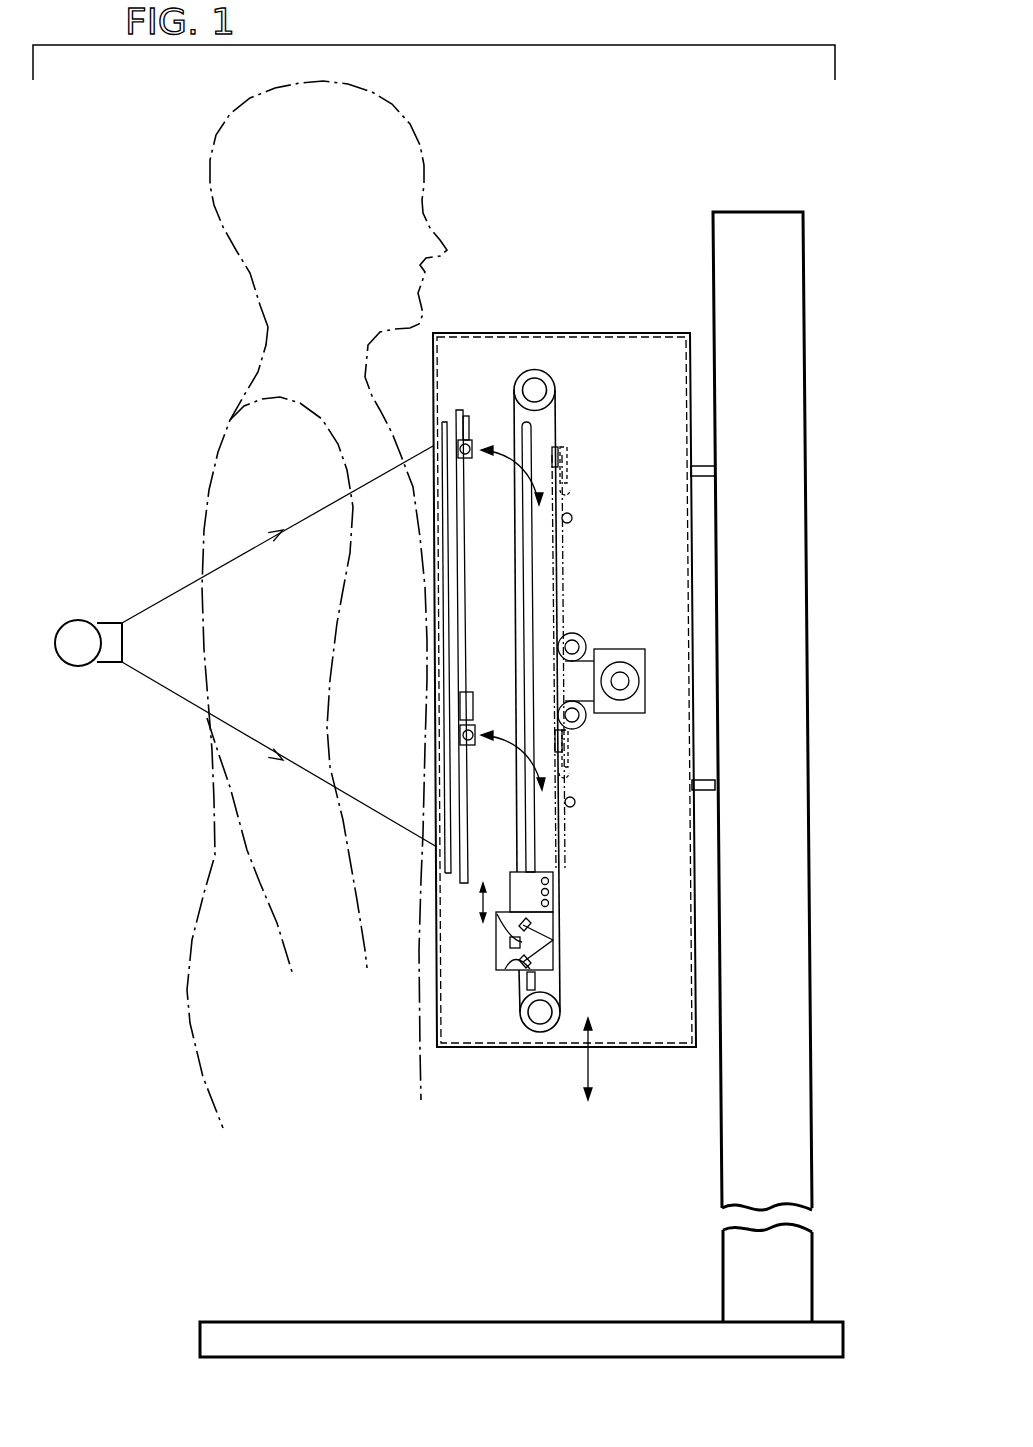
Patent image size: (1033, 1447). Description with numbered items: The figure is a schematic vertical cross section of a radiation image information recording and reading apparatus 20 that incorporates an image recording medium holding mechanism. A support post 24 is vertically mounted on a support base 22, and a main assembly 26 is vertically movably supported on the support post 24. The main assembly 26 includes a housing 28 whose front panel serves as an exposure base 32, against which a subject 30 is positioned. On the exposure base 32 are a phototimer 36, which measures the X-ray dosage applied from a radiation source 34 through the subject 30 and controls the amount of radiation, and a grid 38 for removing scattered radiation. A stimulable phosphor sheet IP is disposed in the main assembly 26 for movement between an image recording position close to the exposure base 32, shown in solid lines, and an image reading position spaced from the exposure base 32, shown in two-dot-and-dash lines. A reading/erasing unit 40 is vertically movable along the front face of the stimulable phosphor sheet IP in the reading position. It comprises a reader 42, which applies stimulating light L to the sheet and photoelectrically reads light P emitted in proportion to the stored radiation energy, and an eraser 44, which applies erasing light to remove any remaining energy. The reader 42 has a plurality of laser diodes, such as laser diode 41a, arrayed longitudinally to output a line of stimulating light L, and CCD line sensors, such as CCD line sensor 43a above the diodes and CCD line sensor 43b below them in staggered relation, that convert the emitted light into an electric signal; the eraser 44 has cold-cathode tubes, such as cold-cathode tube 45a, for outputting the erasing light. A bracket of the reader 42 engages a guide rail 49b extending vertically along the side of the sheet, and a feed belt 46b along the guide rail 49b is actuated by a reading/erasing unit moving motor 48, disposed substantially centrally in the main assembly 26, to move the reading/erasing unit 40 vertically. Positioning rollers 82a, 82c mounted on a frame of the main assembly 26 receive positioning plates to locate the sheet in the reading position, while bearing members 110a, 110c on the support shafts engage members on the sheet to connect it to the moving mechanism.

The radiation image information recording and reading apparatus 20 is at (573, 231).
The support base 22 is at (647, 1313).
The support post 24 is at (722, 1111).
The main assembly 26 is at (584, 328).
The housing 28 is at (620, 1048).
The subject 30 is at (215, 447).
The exposure base 32 is at (438, 553).
The radiation source 34 is at (72, 635).
The phototimer 36 is at (442, 593).
The grid 38 is at (447, 636).
The reading/erasing unit 40 is at (567, 938).
The reader 42 is at (567, 941).
The eraser 44 is at (579, 876).
The cold-cathode tube 45a is at (552, 893).
The laser diode 41a is at (555, 941).
The CCD line sensor 43a is at (553, 963).
The CCD line sensor 43b is at (548, 923).
The feed belt 46b is at (561, 1004).
The reading/erasing unit moving motor 48 is at (627, 708).
The guide rail 49b is at (533, 425).
The positioning roller 82a is at (571, 514).
The positioning roller 82c is at (574, 805).
The bearing member 110a is at (468, 444).
The bearing member 110c is at (458, 734).
The stimulable phosphor sheet IP is at (463, 543).
The stimulating light L is at (490, 902).
The emitted light P is at (508, 995).